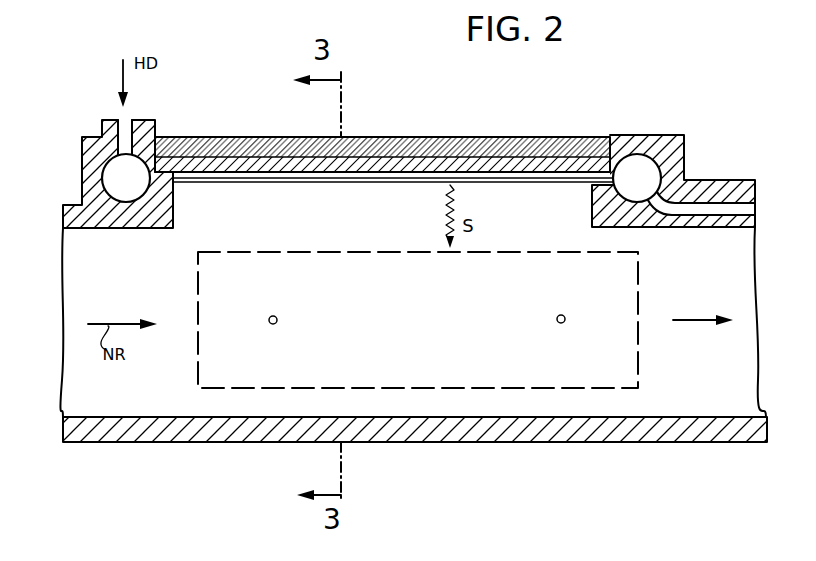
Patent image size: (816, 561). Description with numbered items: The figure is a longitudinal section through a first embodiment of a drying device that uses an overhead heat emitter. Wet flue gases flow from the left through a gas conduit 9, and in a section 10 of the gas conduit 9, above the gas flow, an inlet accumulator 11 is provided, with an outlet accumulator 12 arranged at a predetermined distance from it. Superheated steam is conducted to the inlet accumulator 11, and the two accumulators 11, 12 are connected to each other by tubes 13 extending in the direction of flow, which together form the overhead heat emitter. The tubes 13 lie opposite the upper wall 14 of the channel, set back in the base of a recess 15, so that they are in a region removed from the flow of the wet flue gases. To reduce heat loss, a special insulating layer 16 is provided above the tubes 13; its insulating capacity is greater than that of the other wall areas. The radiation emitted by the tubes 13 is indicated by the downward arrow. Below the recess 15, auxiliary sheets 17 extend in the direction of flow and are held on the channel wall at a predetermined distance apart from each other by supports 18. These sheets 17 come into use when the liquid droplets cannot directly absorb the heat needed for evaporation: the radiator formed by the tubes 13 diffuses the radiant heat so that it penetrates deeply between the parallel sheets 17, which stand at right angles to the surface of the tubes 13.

The gas conduit 9 is at (722, 188).
The section of the gas conduit 10 is at (536, 441).
The inlet accumulator 11 is at (104, 177).
The outlet accumulator 12 is at (638, 163).
The tubes 13 is at (245, 179).
The upper wall of the channel 14 is at (112, 229).
The recess 15 is at (346, 230).
The insulating layer 16 is at (428, 144).
The auxiliary sheets 17 is at (639, 352).
The supports 18 is at (275, 325).